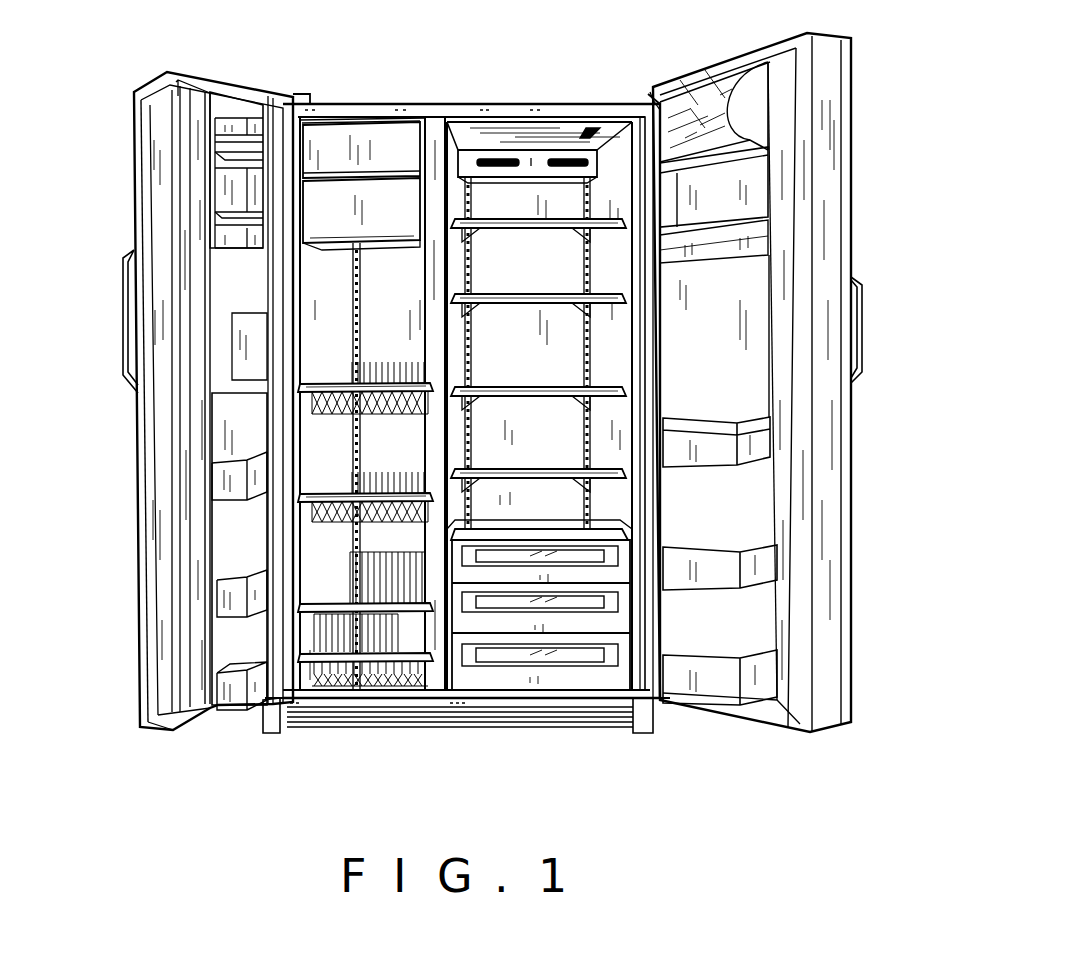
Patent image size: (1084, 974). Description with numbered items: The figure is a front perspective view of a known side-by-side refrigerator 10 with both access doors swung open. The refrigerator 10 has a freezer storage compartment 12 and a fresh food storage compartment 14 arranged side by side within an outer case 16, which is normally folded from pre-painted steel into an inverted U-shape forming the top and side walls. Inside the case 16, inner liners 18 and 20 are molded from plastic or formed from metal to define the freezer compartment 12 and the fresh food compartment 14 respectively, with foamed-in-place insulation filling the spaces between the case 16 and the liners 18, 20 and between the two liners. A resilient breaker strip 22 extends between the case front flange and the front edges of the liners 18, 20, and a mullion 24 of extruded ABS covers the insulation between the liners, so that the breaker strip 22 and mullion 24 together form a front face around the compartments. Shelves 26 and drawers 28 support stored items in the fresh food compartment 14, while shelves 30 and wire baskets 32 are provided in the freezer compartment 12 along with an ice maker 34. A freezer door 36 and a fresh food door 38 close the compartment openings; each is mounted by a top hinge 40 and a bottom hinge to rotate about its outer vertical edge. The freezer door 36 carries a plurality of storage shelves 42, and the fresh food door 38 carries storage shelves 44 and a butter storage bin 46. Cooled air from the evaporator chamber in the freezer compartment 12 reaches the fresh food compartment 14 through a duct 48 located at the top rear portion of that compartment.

The side-by-side refrigerator 10 is at (632, 39).
The freezer storage compartment 12 is at (388, 150).
The fresh food storage compartment 14 is at (600, 126).
The outer case 16 is at (503, 92).
The inner liner 18 is at (335, 124).
The inner liner 20 is at (557, 133).
The breaker strip 22 is at (593, 110).
The mullion 24 is at (437, 438).
The shelves 26 is at (535, 300).
The drawers 28 is at (552, 680).
The shelves 30 is at (375, 295).
The wire baskets 32 is at (330, 492).
The ice maker 34 is at (363, 215).
The freezer door 36 is at (124, 118).
The fresh food door 38 is at (868, 110).
The top hinge 40 is at (300, 92).
The storage shelves 42 is at (205, 672).
The storage shelves 44 is at (712, 430).
The butter storage bin 46 is at (703, 163).
The duct 48 is at (527, 158).